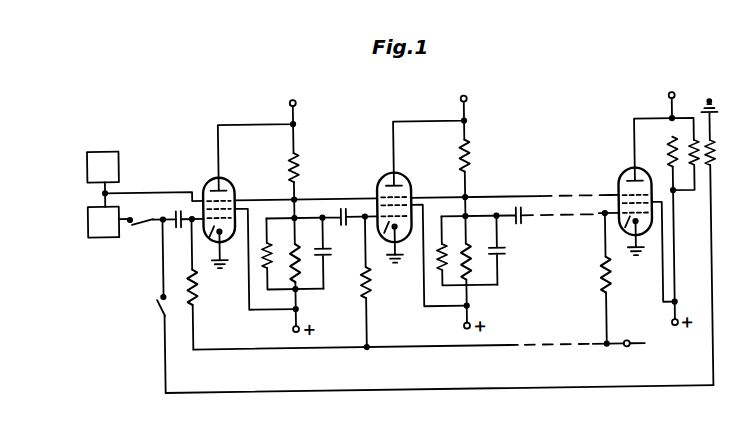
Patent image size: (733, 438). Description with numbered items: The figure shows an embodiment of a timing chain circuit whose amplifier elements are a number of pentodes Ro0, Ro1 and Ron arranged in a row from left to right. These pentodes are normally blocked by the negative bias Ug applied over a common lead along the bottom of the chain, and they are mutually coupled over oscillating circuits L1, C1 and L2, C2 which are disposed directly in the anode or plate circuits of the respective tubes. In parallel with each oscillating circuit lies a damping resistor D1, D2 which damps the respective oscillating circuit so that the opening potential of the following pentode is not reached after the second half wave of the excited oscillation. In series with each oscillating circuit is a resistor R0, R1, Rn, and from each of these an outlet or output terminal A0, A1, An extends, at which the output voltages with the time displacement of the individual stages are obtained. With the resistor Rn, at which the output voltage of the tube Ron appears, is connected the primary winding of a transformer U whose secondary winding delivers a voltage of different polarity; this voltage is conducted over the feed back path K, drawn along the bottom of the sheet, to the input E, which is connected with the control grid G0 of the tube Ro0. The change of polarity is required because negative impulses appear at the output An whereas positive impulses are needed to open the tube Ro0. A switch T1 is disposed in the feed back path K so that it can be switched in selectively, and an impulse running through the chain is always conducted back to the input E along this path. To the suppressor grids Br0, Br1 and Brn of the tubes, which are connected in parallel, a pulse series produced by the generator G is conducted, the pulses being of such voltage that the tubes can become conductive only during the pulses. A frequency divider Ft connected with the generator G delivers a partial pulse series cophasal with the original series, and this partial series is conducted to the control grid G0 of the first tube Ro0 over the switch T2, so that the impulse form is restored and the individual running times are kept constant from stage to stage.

The generator G is at (136, 138).
The frequency divider Ft is at (100, 233).
The switch T2 is at (136, 234).
The input E is at (164, 249).
The switch T1 is at (153, 300).
The feed back path K is at (439, 380).
The control grid G0 is at (199, 284).
The negative bias Ug is at (432, 353).
The pentode Ro0 is at (223, 220).
The suppressor grid Br0 is at (210, 195).
The output terminal A0 is at (292, 93).
The resistor R0 is at (304, 184).
The damping resistor D1 is at (305, 278).
The inductance of oscillating circuit L1 is at (292, 254).
The capacitor of oscillating circuit C1 is at (330, 252).
The pentode Ro1 is at (398, 217).
The suppressor grid Br1 is at (384, 196).
The output terminal A1 is at (464, 90).
The resistor R1 is at (475, 181).
The damping resistor D2 is at (478, 275).
The inductance of oscillating circuit L2 is at (466, 251).
The capacitor of oscillating circuit C2 is at (505, 249).
The pentode Ron is at (614, 211).
The suppressor grid Brn is at (626, 198).
The output terminal An is at (668, 87).
The resistor Rn is at (664, 228).
The transformer U is at (690, 158).